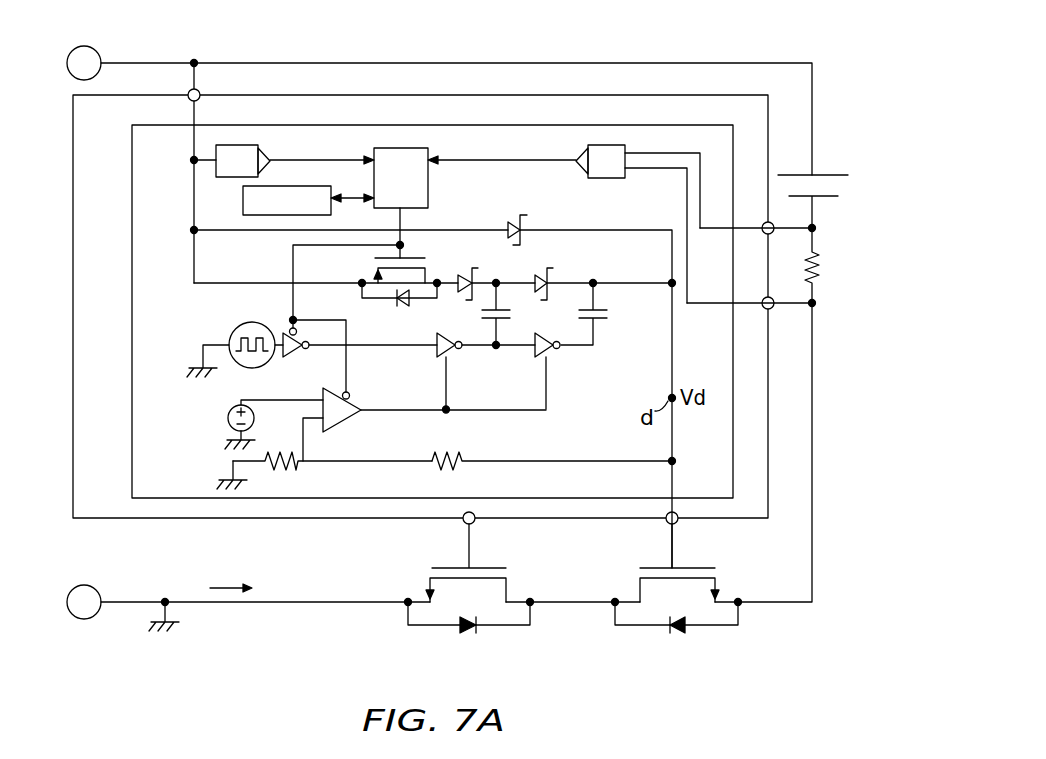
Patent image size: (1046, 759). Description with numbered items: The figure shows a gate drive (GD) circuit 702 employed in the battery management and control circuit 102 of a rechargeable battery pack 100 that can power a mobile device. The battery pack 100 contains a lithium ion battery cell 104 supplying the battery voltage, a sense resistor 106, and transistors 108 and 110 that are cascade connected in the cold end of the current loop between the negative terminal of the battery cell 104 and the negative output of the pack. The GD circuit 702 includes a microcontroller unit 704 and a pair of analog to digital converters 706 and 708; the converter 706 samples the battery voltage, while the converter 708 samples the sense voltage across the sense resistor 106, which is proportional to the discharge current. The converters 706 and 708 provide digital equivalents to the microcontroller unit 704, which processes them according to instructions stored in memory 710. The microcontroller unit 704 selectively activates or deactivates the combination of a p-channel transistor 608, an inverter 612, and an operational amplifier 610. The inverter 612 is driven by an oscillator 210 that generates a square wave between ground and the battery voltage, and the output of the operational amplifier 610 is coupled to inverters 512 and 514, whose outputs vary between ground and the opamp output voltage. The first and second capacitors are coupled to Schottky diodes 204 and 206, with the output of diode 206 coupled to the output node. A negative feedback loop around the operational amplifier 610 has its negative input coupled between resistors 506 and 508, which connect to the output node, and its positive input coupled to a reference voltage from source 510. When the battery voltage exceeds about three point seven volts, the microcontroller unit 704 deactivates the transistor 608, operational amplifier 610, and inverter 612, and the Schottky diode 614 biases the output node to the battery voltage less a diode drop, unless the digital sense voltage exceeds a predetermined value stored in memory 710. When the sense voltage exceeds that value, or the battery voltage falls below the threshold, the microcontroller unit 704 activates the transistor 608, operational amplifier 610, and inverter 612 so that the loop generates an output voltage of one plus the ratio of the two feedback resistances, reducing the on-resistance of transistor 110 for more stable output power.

The rechargeable battery pack 100 is at (826, 26).
The battery management and control (BMC) circuit 102 is at (763, 121).
The lithium ion battery cell 104 is at (806, 173).
The sense resistor 106 is at (806, 278).
The transistor 108 is at (506, 550).
The transistor 110 is at (715, 550).
The Schottky diode 204 is at (482, 273).
The Schottky diode 206 is at (558, 273).
The oscillator 210 is at (242, 325).
The resistor 506 is at (298, 465).
The resistor 508 is at (462, 465).
The reference voltage VR2 source 510 is at (232, 408).
The inverter 512 is at (437, 338).
The inverter 514 is at (538, 352).
The p-channel metal oxide field effect transistor 608 is at (415, 256).
The operational amplifier 610 is at (347, 424).
The inverter 612 is at (296, 352).
The Schottky diode 614 is at (508, 226).
The GD circuit 702 is at (514, 156).
The microcontroller unit (MCU) 704 is at (430, 196).
The analog to digital (A/D) converter 706 is at (270, 152).
The analog to digital (A/D) converter 708 is at (628, 150).
The memory 710 is at (243, 212).